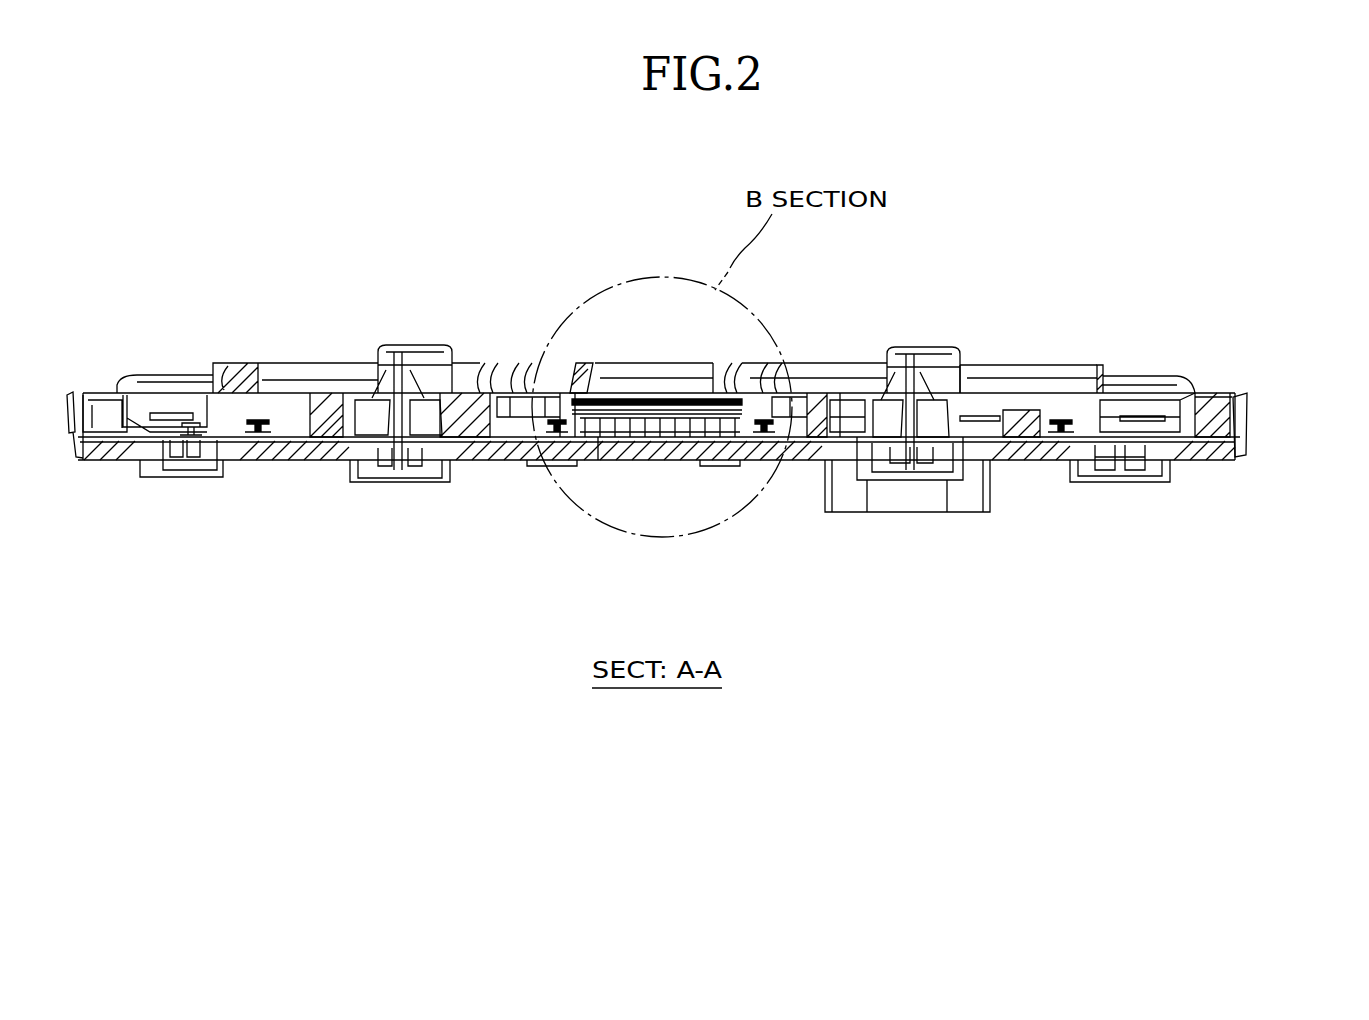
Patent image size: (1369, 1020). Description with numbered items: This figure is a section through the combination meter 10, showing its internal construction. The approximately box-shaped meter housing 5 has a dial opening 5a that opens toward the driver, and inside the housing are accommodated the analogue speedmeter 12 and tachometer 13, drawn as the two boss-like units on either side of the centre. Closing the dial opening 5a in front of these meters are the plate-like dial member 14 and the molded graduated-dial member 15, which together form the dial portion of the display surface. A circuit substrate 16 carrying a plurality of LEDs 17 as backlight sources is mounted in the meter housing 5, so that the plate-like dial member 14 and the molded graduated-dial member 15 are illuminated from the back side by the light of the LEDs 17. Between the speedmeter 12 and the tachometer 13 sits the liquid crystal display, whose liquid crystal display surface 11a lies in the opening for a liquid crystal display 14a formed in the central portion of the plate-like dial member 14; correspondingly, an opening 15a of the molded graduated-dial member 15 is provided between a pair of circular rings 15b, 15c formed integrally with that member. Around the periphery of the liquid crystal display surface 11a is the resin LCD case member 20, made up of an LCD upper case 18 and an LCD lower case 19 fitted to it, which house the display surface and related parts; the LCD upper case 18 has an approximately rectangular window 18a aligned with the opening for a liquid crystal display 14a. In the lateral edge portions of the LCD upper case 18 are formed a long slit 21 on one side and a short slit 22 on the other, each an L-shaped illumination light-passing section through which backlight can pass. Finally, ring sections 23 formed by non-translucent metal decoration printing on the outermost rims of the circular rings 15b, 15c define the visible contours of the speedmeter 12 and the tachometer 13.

The meter housing 5 is at (1250, 435).
The dial opening 5a is at (1228, 390).
The combination meter 10 is at (1262, 382).
The liquid crystal display surface 11a is at (672, 400).
The speedmeter 12 is at (948, 342).
The tachometer 13 is at (380, 342).
The plate-like dial member 14 is at (1190, 392).
The opening for a liquid crystal display 14a is at (613, 393).
The molded graduated-dial member 15 is at (1102, 392).
The opening 15a is at (708, 393).
The circular ring 15b is at (345, 372).
The circular ring 15c is at (1015, 370).
The circuit substrate 16 is at (845, 395).
The LEDs 17 is at (256, 415).
The LCD upper case 18 is at (740, 452).
The window 18a is at (640, 400).
The LCD lower case 19 is at (715, 452).
The LCD case member 20 is at (776, 588).
The long slit 21 is at (560, 415).
The short slit 22 is at (770, 415).
The ring section 23 is at (590, 380).